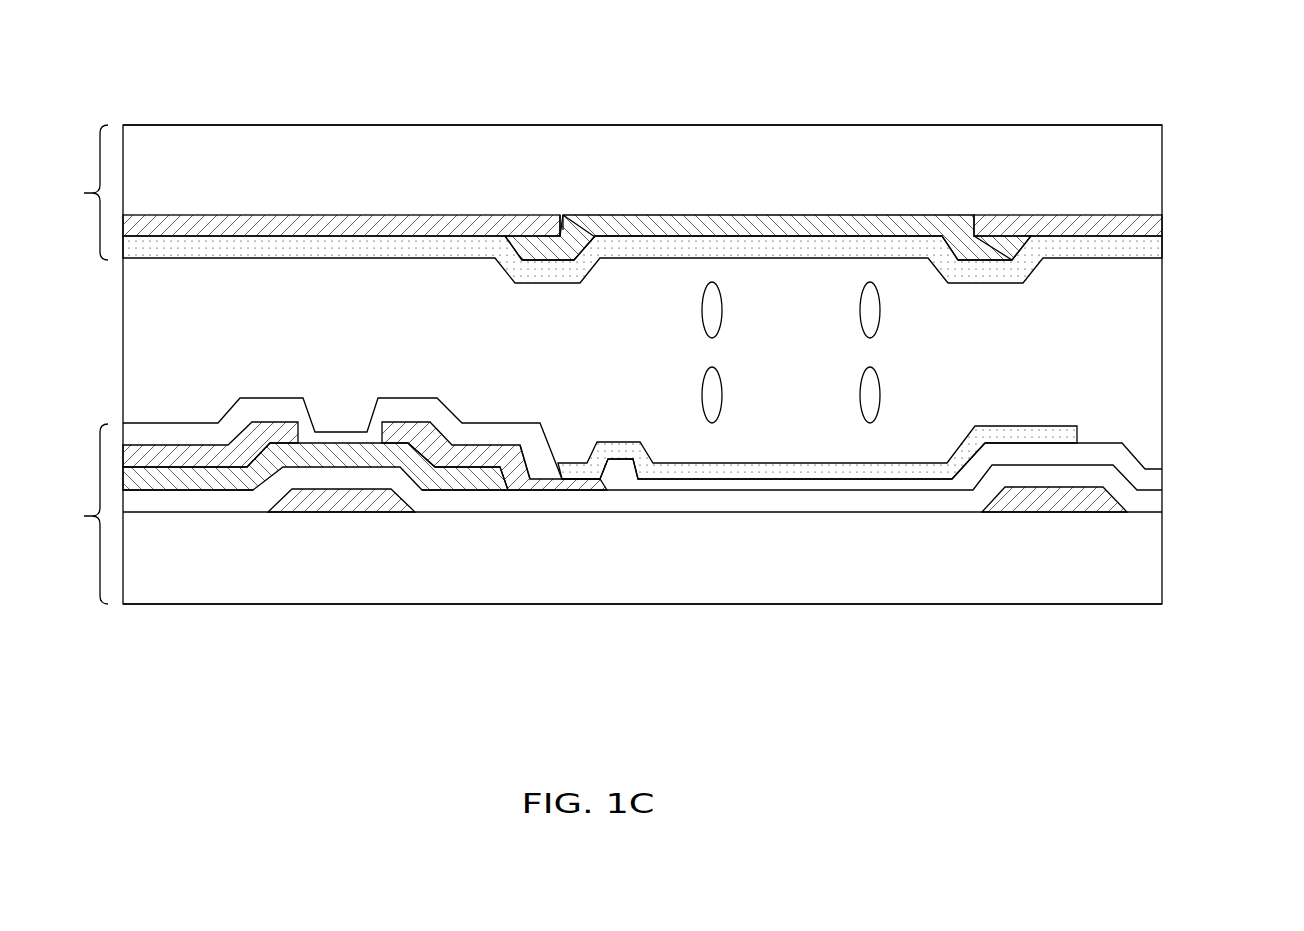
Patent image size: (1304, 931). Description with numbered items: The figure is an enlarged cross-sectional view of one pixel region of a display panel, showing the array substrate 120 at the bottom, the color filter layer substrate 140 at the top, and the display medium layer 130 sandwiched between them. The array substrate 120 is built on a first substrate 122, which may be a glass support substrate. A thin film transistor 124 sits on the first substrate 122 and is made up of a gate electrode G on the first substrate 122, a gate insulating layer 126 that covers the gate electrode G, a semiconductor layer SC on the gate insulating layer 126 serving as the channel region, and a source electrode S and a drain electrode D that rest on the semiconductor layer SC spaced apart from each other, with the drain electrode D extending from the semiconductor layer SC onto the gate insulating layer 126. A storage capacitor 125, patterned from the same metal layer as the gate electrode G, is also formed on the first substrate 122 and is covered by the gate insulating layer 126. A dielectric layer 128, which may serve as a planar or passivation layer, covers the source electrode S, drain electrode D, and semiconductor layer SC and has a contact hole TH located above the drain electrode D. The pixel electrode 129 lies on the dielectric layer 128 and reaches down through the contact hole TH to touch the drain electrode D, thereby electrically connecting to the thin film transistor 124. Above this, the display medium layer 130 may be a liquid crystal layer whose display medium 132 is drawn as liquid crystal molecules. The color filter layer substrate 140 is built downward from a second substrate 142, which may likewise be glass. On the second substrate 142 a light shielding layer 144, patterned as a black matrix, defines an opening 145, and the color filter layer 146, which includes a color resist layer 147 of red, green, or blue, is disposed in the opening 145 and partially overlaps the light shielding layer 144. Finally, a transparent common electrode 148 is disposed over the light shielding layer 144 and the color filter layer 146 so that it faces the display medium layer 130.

The array substrate 120 is at (73, 514).
The first substrate 122 is at (1125, 559).
The thin film transistor 124 is at (365, 573).
The storage capacitor 125 is at (1040, 500).
The gate insulating layer 126 is at (573, 498).
The dielectric layer 128 is at (159, 434).
The pixel electrode 129 is at (788, 470).
The display medium layer 130 is at (153, 302).
The display medium 132 is at (870, 310).
The color filter layer substrate 140 is at (73, 192).
The second substrate 142 is at (248, 157).
The light shielding layer 144 is at (363, 223).
The opening 145 is at (547, 225).
The color filter layer 146 is at (583, 203).
The color resist layer 147 is at (745, 225).
The common electrode 148 is at (880, 245).
The source electrode S is at (207, 455).
The semiconductor layer SC is at (288, 452).
The gate electrode G is at (335, 497).
The drain electrode D is at (400, 430).
The contact hole TH is at (535, 470).